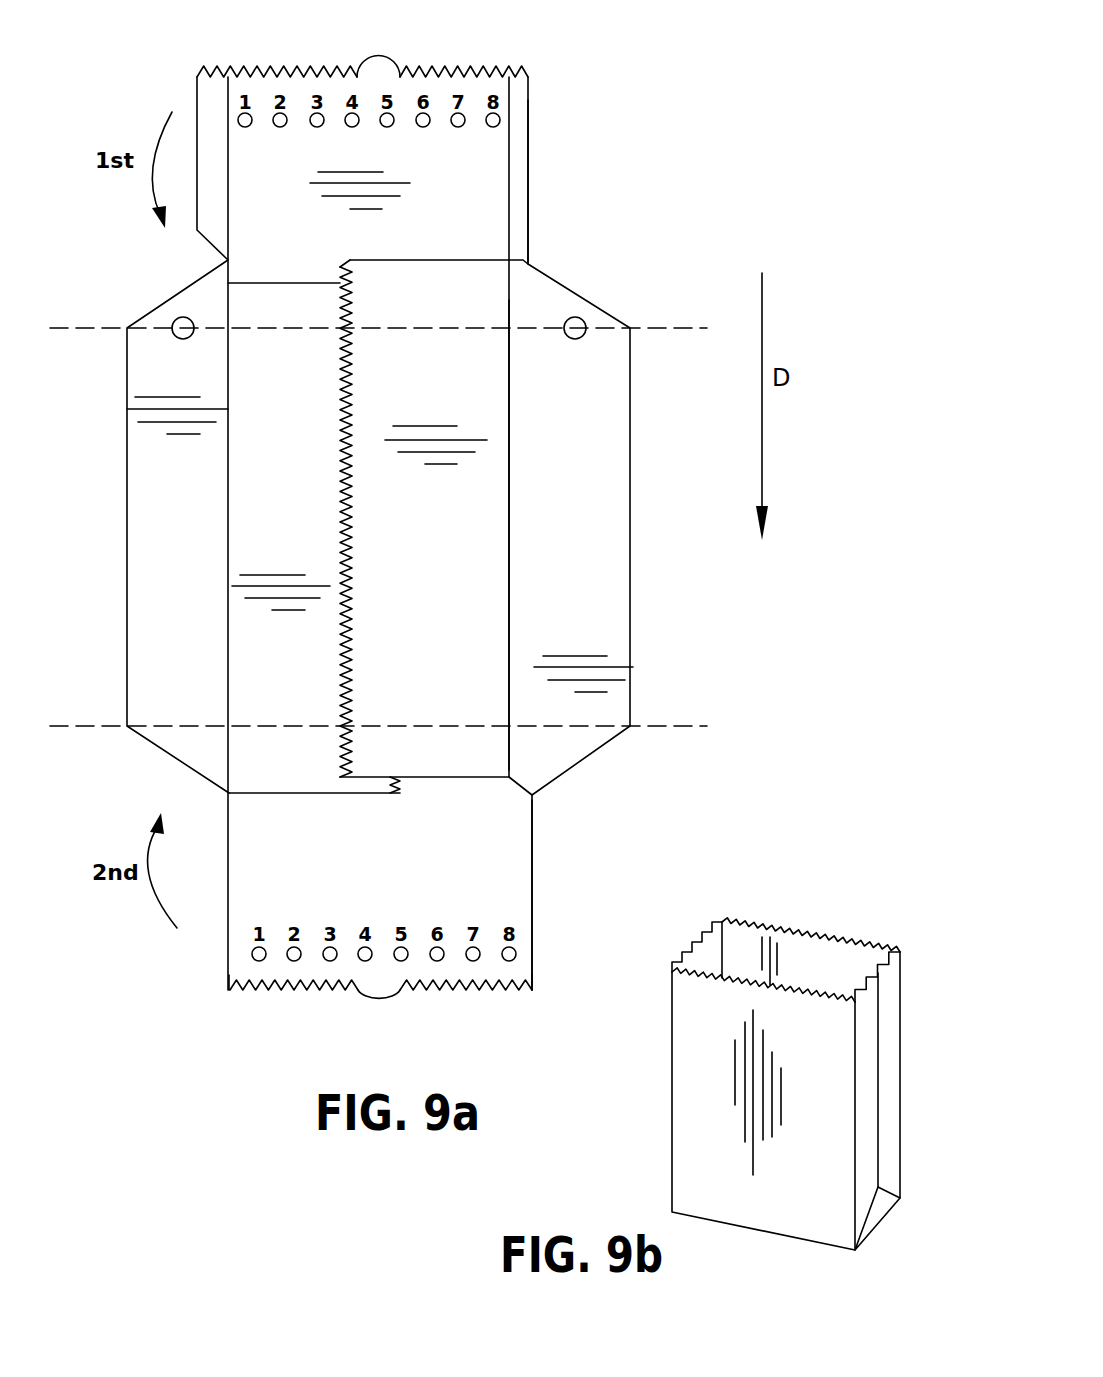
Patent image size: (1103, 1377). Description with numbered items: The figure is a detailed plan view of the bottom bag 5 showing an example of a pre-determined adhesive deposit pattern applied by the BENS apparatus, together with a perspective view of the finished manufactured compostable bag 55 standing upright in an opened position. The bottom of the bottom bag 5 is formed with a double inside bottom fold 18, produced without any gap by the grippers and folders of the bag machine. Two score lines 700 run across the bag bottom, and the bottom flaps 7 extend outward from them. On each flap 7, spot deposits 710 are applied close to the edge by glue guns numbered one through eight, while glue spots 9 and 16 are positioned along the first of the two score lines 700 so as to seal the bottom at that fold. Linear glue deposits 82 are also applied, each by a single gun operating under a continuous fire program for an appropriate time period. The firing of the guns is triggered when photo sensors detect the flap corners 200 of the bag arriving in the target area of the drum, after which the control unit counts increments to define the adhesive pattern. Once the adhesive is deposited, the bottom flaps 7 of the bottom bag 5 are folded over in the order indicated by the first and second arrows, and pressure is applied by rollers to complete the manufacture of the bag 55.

In FIG. 9a, the bottom bag 5 is at (630, 470).
In FIG. 9b, the bottom bag 5 is at (786, 1083).
In FIG. 9a, the flaps 7 is at (528, 203).
In FIG. 9a, the glue spot 9 is at (183, 347).
In FIG. 9a, the glue spot 16 is at (574, 347).
In FIG. 9a, the double inside bottom fold 18 is at (402, 799).
In FIG. 9b, the manufactured compostable bag 55 is at (788, 903).
In FIG. 9a, the linear glue deposits 82 is at (229, 647).
In FIG. 9a, the flap corners 200 is at (230, 990).
In FIG. 9a, the score lines 700 is at (108, 330).
In FIG. 9a, the spot deposits 710 is at (288, 114).